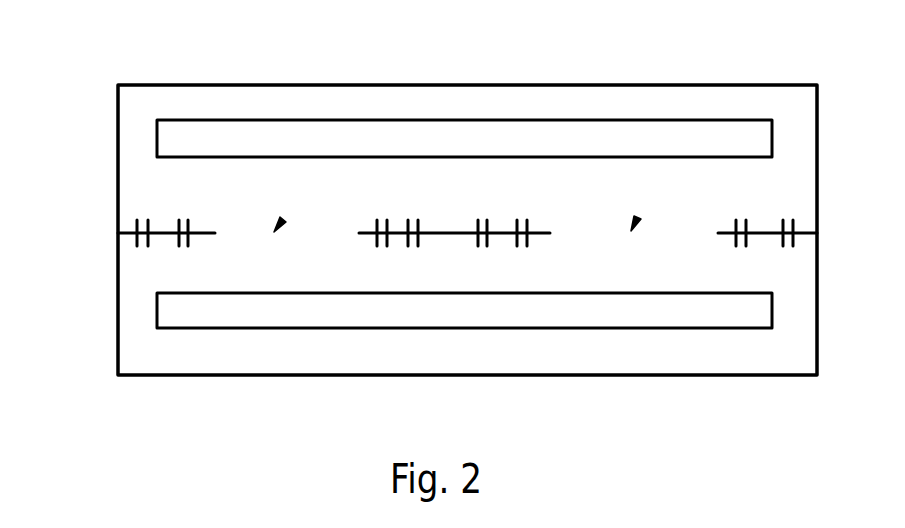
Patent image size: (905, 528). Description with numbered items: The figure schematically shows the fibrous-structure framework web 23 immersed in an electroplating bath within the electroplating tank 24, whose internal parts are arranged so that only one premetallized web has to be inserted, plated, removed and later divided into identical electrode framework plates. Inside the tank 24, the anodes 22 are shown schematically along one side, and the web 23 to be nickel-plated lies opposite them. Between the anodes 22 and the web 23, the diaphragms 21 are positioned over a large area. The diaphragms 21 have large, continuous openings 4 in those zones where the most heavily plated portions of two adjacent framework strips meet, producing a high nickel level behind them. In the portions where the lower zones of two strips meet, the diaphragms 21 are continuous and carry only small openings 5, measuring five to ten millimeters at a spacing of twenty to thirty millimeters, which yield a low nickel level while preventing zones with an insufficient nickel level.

The large continuous openings 4 is at (283, 220).
The small openings 5 is at (182, 216).
The diaphragms 21 is at (161, 241).
The anodes 22 is at (673, 128).
The fibrous-structure framework web 23 is at (690, 314).
The electroplating tank 24 is at (255, 377).